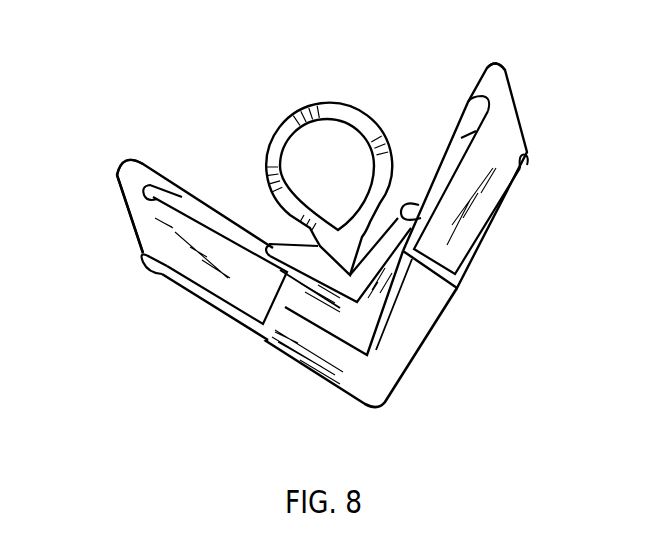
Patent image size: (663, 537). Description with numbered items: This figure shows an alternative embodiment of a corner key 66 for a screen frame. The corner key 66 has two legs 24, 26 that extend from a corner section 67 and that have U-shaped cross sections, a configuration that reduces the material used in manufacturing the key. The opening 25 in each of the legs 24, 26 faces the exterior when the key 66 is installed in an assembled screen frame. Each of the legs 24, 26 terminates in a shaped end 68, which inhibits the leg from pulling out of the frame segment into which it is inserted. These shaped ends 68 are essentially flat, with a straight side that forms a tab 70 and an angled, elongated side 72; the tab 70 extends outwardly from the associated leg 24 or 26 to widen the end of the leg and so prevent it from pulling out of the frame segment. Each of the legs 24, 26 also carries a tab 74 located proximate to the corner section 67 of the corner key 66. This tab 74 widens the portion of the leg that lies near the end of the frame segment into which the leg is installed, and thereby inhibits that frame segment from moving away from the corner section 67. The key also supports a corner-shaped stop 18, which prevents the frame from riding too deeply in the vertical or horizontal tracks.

The corner key 66 is at (304, 62).
The shaped end 68 is at (132, 165).
The tab 70 is at (172, 188).
The angled, elongated side 72 is at (120, 205).
The tab 74 is at (276, 247).
The opening 25 is at (178, 270).
The leg 24 is at (216, 310).
The leg 26 is at (492, 228).
The corner section 67 is at (320, 375).
The corner-shaped stop 18 is at (380, 328).